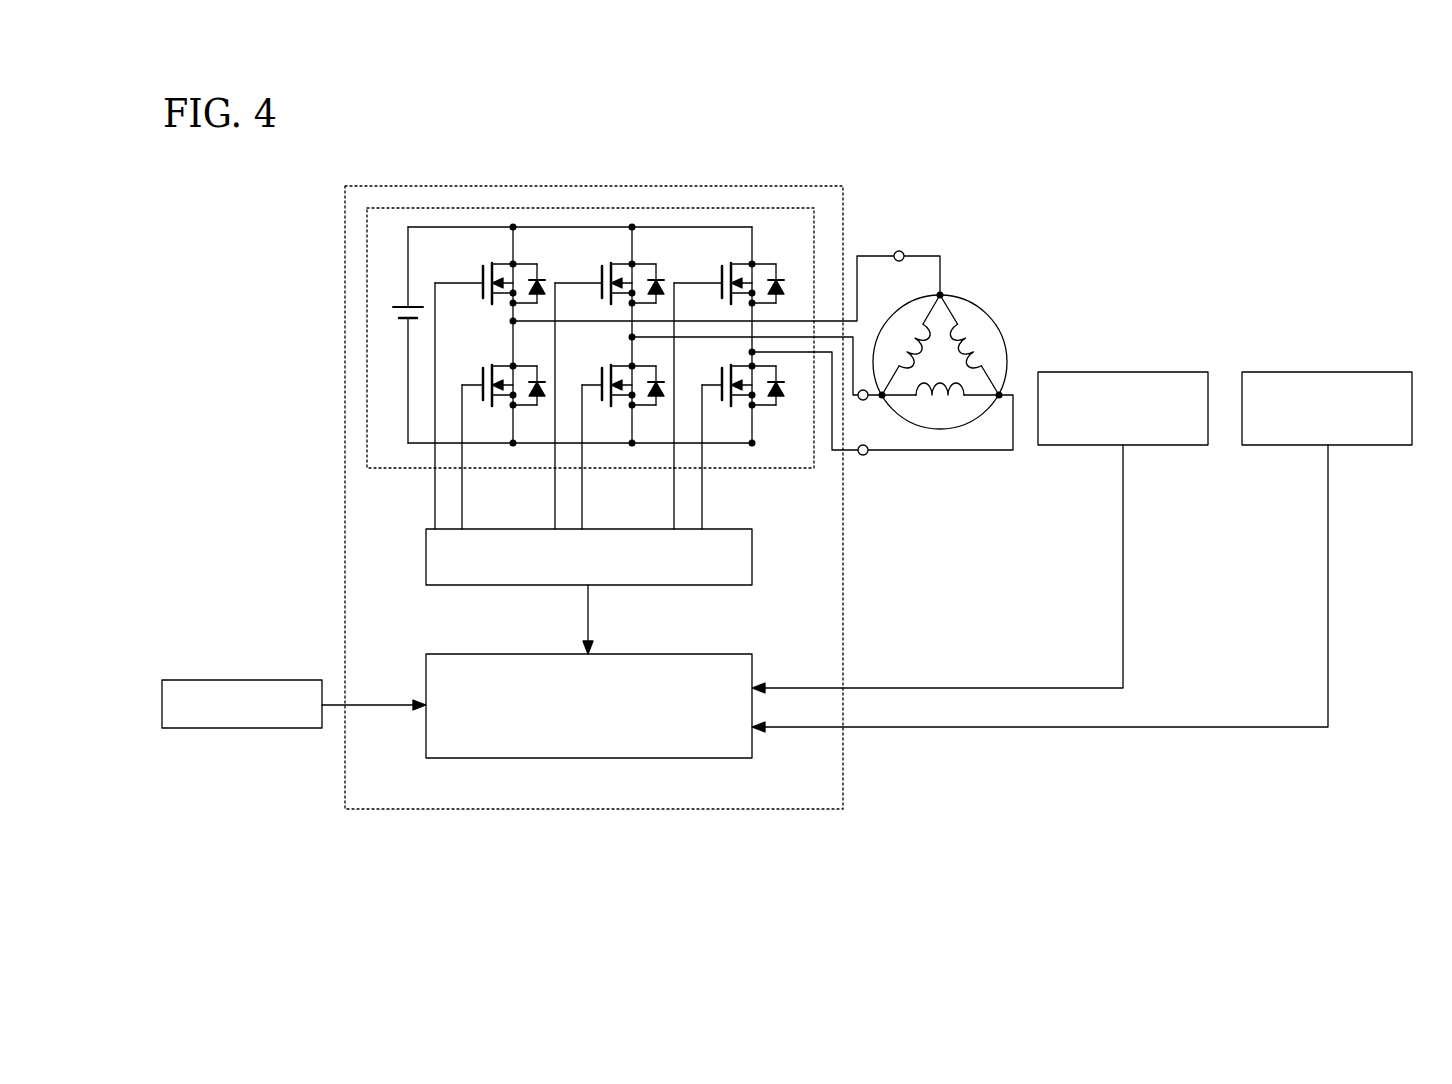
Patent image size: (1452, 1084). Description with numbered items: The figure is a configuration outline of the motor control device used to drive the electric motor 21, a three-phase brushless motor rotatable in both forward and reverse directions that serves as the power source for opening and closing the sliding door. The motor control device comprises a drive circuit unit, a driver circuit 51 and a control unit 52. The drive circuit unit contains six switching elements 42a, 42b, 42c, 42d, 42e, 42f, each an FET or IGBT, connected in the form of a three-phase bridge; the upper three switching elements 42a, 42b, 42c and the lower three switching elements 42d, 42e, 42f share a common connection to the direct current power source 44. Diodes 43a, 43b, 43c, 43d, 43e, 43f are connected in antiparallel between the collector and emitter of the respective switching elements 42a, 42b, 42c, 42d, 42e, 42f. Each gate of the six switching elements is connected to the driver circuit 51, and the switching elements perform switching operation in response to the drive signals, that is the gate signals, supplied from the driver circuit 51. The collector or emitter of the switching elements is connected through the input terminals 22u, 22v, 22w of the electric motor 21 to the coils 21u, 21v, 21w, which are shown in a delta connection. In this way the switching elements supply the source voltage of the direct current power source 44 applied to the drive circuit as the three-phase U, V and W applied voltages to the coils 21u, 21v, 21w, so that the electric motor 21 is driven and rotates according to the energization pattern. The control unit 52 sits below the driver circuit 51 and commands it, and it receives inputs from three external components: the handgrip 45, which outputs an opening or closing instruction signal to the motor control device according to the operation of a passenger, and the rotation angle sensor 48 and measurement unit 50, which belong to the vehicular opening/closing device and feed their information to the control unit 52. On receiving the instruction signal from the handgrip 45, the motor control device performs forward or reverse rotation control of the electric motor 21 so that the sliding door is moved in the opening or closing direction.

The electric motor 21 is at (958, 283).
The U-phase coil 21u is at (908, 343).
The V-phase coil 21v is at (938, 406).
The W-phase coil 21w is at (980, 340).
The U-phase input terminal 22u is at (899, 250).
The V-phase input terminal 22v is at (868, 400).
The W-phase input terminal 22w is at (864, 456).
The switching element 42a is at (481, 281).
The switching element 42b is at (600, 280).
The switching element 42c is at (720, 280).
The switching element 42d is at (481, 383).
The switching element 42e is at (600, 383).
The switching element 42f is at (721, 395).
The diode 43a is at (540, 276).
The diode 43b is at (659, 276).
The diode 43c is at (778, 279).
The diode 43d is at (540, 398).
The diode 43e is at (658, 398).
The diode 43f is at (777, 406).
The direct current power source 44 is at (405, 305).
The handgrip 45 is at (240, 680).
The rotation angle sensor 48 is at (1125, 372).
The measurement unit 50 is at (1328, 372).
The driver circuit 51 is at (752, 558).
The control unit 52 is at (670, 654).